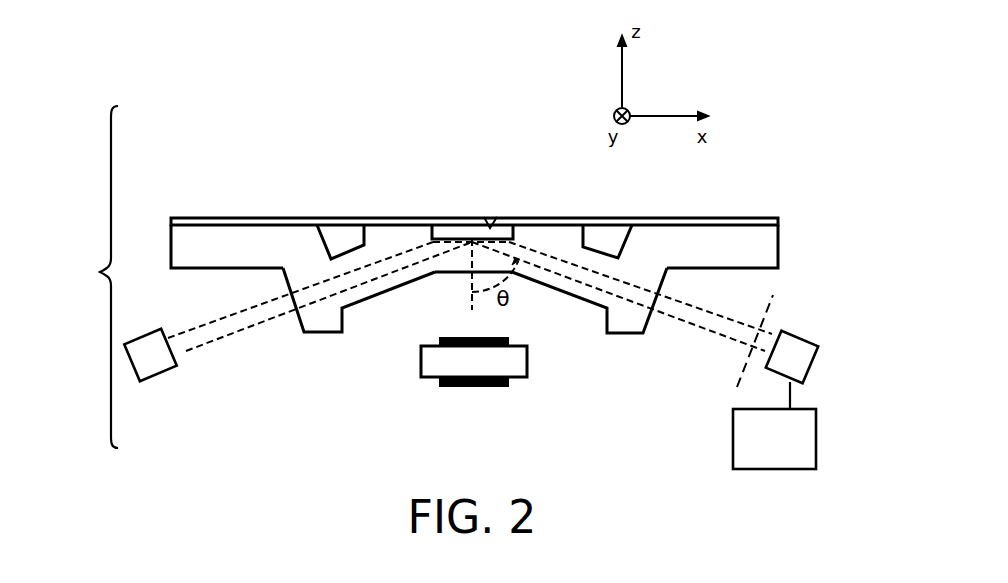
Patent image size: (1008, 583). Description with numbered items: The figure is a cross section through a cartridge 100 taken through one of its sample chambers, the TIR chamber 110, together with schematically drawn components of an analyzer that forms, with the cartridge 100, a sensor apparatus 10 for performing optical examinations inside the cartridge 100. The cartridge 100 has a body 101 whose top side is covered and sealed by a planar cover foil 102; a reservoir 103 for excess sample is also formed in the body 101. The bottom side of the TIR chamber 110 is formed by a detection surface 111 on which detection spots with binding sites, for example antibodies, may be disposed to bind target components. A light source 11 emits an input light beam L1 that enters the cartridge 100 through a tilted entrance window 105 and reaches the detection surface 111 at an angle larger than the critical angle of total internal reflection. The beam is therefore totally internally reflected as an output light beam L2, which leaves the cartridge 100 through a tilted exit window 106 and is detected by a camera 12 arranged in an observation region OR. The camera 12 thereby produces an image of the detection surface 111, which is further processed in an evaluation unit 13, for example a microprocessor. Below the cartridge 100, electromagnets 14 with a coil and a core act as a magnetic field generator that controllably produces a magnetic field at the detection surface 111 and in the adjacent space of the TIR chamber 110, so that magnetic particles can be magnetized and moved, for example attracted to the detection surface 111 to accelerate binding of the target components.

The sensor apparatus 10 is at (92, 277).
The light source 11 is at (153, 367).
The camera 12 is at (803, 360).
The evaluation unit 13 is at (762, 450).
The electromagnets 14 is at (518, 361).
The cartridge 100 is at (510, 273).
The body 101 is at (205, 230).
The cover foil 102 is at (265, 222).
The reservoir 103 is at (350, 235).
The entrance window 105 is at (290, 330).
The exit window 106 is at (647, 322).
The TIR chamber 110 is at (450, 232).
The detection surface 111 is at (490, 226).
The input light beam L1 is at (223, 328).
The output light beam L2 is at (702, 325).
The observation region OR is at (771, 303).